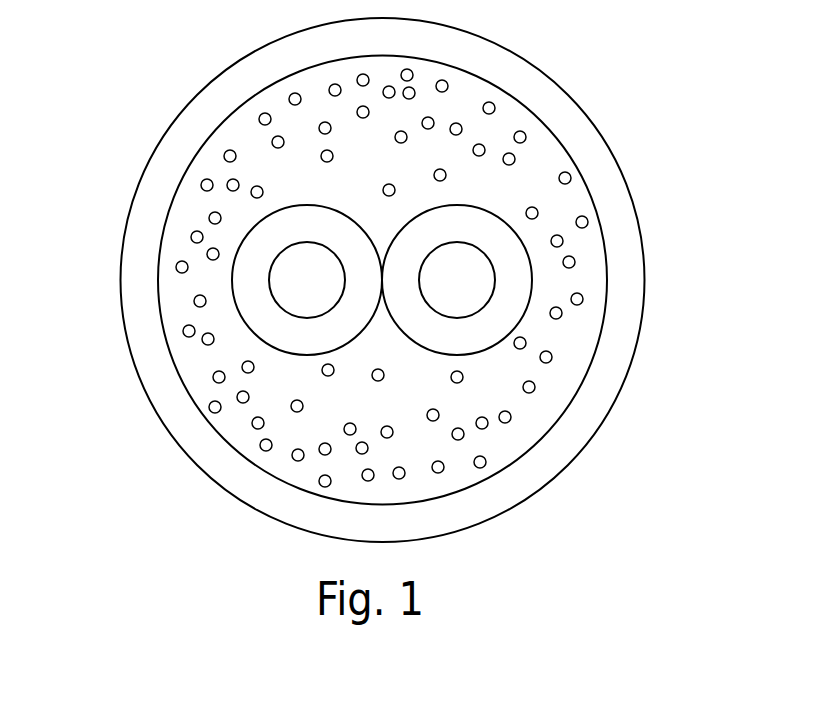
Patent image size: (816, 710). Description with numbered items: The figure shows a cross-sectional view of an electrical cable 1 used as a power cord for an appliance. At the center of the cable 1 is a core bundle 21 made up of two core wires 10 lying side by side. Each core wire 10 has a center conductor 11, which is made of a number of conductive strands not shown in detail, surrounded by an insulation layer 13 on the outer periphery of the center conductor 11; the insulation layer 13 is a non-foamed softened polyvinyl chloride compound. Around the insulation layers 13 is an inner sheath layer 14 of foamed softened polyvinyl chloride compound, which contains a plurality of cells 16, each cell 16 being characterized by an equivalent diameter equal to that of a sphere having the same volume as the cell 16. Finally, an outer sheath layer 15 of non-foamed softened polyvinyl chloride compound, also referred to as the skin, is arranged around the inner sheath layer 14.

The electrical cable 1 is at (372, 280).
The core wire 10 is at (372, 277).
The center conductor 11 is at (382, 280).
The insulation layer 13 is at (382, 225).
The inner sheath layer 14 is at (495, 367).
The outer sheath layer 15 is at (543, 93).
The cell 16 is at (569, 176).
The core bundle 21 is at (375, 350).